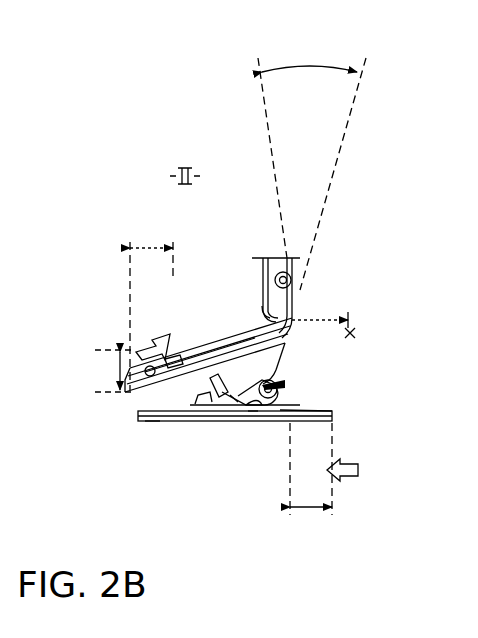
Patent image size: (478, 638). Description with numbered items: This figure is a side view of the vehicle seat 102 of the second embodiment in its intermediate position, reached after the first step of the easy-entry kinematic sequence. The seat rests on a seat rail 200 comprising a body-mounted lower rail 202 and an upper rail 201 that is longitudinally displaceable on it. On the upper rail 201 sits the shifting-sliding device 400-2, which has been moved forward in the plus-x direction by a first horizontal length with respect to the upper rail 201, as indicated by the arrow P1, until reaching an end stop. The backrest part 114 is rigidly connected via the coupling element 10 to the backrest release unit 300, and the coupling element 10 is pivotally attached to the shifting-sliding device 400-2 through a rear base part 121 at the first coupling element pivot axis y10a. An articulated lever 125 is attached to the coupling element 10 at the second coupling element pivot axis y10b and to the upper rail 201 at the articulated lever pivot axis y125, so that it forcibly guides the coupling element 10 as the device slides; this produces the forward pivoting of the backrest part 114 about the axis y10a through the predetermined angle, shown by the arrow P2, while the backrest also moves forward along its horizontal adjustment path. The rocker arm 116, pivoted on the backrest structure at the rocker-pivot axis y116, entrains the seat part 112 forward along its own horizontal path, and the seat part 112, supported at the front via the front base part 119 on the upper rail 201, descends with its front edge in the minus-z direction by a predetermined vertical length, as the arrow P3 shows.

The coupling element 10 is at (276, 357).
The vehicle seat 102 is at (298, 182).
The seat part 112 is at (133, 372).
The backrest part 114 is at (270, 258).
The rocker arm 116 is at (227, 340).
The front base part 119 is at (202, 396).
The rear base part 121 is at (290, 400).
The articulated lever 125 is at (237, 409).
The seat rail 200 is at (142, 428).
The upper rail 201 is at (217, 411).
The lower rail 202 is at (165, 416).
The backrest release unit 300 is at (265, 310).
The shifting-sliding device 400-2 is at (285, 410).
The rocker-pivot axis y116 is at (283, 280).
The first coupling element pivot axis y10a is at (268, 389).
The second coupling element pivot axis y10b is at (218, 385).
The articulated lever pivot axis y125 is at (252, 411).
The arrow P1 is at (352, 470).
The arrow P2 is at (287, 374).
The arrow P3 is at (160, 337).